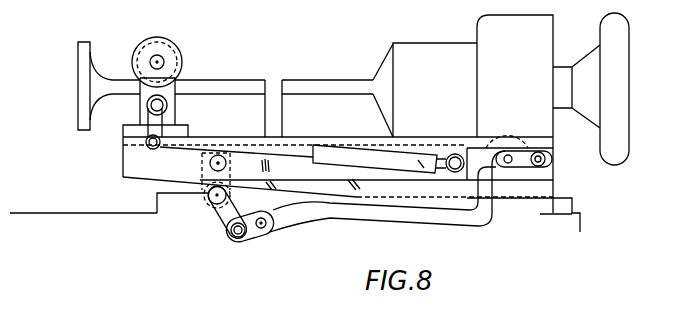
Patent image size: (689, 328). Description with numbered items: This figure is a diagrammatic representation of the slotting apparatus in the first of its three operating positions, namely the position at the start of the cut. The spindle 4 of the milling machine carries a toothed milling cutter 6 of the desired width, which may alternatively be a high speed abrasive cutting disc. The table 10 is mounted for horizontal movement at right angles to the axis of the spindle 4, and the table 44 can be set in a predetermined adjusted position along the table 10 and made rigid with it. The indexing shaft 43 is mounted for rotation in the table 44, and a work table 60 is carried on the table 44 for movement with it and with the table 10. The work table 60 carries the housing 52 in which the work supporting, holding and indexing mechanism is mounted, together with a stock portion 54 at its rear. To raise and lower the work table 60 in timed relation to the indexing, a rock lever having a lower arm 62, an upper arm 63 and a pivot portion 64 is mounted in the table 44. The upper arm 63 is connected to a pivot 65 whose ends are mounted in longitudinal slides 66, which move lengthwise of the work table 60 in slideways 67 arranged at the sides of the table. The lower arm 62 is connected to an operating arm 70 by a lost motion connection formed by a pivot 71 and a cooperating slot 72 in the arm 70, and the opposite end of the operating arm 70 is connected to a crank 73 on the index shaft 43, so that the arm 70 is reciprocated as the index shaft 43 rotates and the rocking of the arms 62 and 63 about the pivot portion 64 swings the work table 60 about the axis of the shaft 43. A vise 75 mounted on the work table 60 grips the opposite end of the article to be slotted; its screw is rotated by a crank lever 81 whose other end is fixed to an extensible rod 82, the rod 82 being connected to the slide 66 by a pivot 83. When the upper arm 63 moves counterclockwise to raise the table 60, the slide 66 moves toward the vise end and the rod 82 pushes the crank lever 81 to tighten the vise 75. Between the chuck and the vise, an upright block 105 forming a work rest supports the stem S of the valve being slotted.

The table 10 is at (63, 213).
The stem S is at (311, 79).
The spindle 4 is at (149, 62).
The toothed milling cutter 6 is at (179, 50).
The vise 75 is at (176, 105).
The crank lever 81 is at (150, 118).
The pivot 83 is at (145, 141).
The work table 60 is at (123, 158).
The slideways 67 is at (131, 178).
The upper arm 63 is at (202, 163).
The pivot 65 is at (221, 161).
The longitudinal slides 66 is at (298, 177).
The extensible rod 82 is at (305, 146).
The upright block 105 is at (277, 107).
The housing 52 is at (473, 114).
The stock 54 is at (612, 38).
The indexing shaft 43 is at (502, 180).
The crank 73 is at (546, 160).
The operating arm 70 is at (310, 214).
The pivot portion 64 is at (209, 198).
The lower arm 62 is at (221, 216).
The pivot 71 is at (234, 234).
The slot 72 is at (261, 229).
The table 44 is at (157, 207).